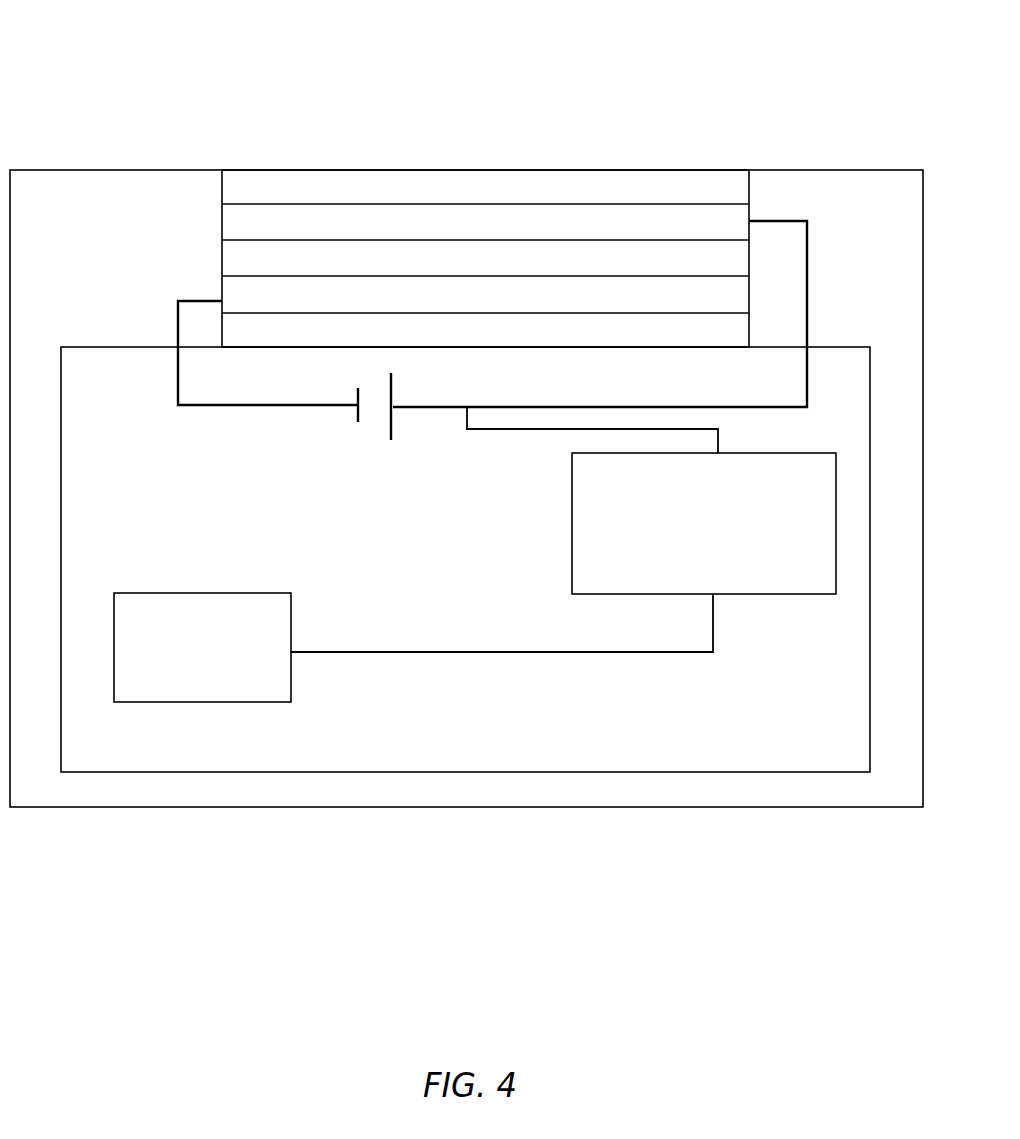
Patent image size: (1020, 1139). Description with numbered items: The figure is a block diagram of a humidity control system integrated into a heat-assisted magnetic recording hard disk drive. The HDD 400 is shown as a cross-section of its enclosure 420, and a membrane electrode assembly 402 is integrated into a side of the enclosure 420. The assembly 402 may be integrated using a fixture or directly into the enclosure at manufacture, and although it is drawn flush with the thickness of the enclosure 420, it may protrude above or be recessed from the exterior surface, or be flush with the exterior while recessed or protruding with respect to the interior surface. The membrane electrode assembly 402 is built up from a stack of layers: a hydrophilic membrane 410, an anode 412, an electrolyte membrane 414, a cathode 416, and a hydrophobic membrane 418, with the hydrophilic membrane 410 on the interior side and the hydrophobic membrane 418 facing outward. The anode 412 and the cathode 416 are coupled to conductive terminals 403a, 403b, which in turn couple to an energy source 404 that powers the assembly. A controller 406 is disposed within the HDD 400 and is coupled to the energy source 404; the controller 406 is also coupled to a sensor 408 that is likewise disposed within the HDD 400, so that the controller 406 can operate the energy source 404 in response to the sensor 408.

The hard disk drive 400 is at (172, 51).
The membrane electrode assembly 402 is at (485, 243).
The conductive terminal 403a is at (178, 365).
The conductive terminal 403b is at (808, 322).
The energy source 404 is at (417, 417).
The controller 406 is at (704, 523).
The sensor 408 is at (202, 647).
The hydrophilic membrane 410 is at (485, 334).
The anode 412 is at (485, 298).
The electrolyte membrane 414 is at (485, 261).
The cathode 416 is at (485, 225).
The hydrophobic membrane 418 is at (485, 191).
The enclosure 420 is at (466, 488).